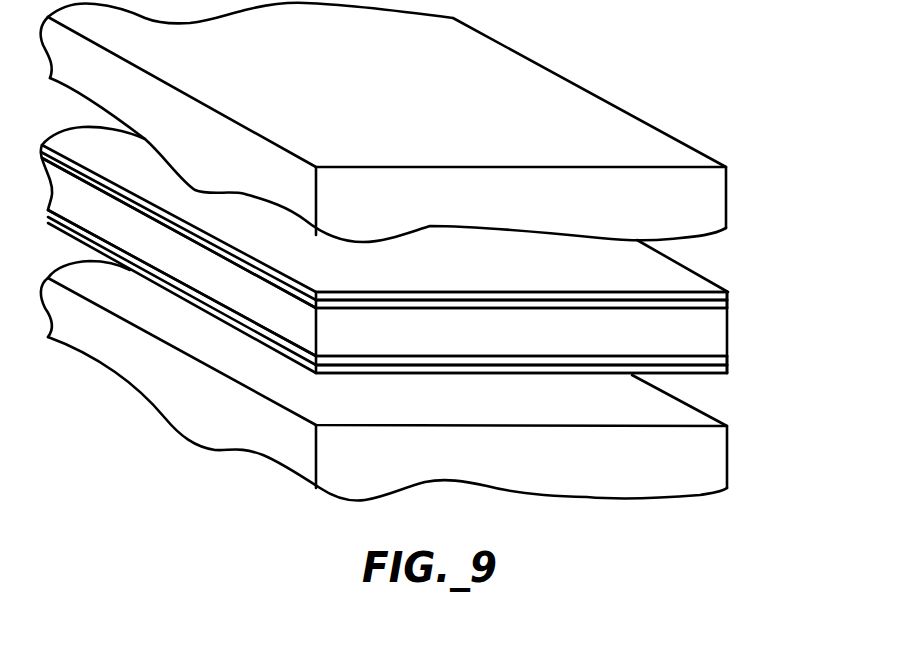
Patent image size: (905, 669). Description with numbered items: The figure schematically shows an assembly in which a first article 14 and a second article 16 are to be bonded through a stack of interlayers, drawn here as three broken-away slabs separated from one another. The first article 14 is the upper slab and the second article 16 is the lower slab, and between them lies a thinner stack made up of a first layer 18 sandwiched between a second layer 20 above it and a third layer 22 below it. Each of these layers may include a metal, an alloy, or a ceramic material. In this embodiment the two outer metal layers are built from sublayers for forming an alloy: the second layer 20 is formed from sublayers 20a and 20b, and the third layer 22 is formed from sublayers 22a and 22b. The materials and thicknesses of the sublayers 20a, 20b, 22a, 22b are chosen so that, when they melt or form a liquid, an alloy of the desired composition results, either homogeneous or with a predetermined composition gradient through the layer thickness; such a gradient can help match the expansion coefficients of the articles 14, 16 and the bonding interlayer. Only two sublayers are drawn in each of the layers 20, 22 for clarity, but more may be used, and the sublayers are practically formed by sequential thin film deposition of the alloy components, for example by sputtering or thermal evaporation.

The first article 14 is at (716, 208).
The second article 16 is at (717, 480).
The first layer 18 is at (742, 337).
The second layer 20 is at (745, 305).
The sublayer 20a is at (683, 296).
The sublayer 20b is at (708, 304).
The third layer 22 is at (758, 361).
The sublayer 22a is at (697, 362).
The sublayer 22b is at (705, 370).